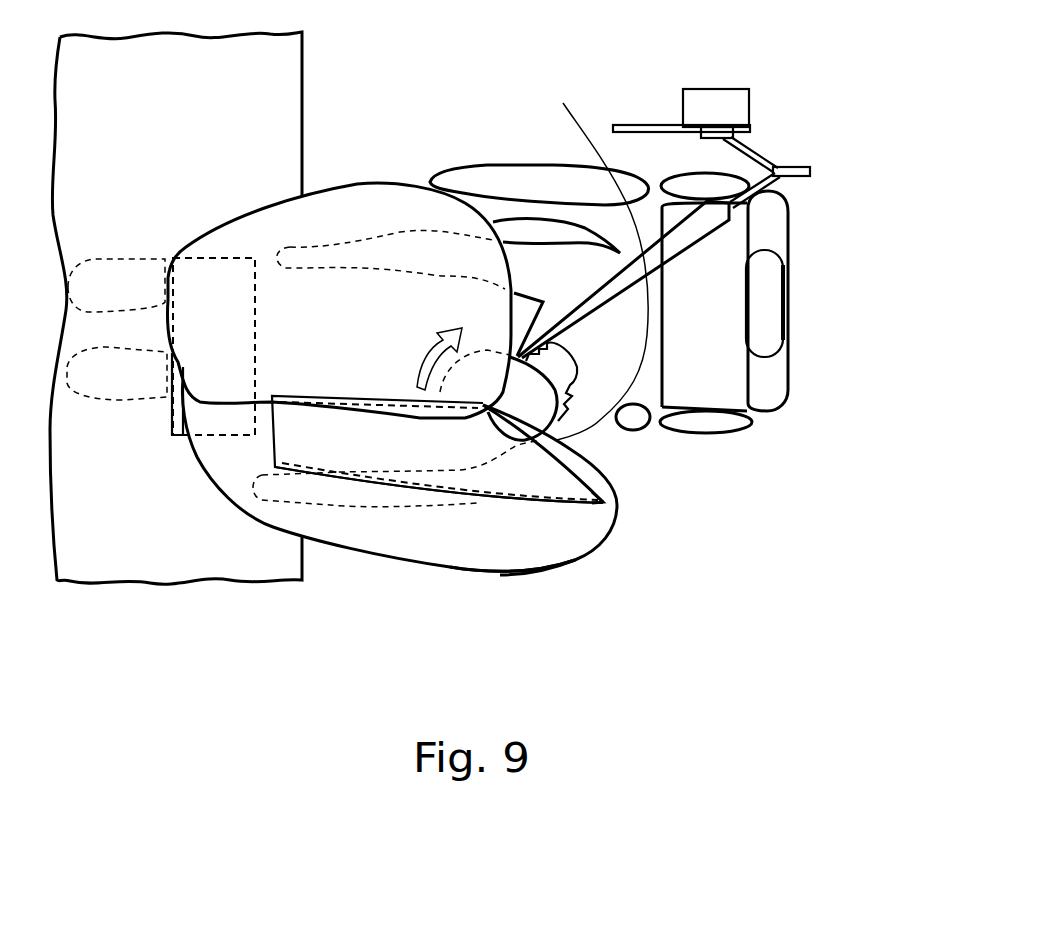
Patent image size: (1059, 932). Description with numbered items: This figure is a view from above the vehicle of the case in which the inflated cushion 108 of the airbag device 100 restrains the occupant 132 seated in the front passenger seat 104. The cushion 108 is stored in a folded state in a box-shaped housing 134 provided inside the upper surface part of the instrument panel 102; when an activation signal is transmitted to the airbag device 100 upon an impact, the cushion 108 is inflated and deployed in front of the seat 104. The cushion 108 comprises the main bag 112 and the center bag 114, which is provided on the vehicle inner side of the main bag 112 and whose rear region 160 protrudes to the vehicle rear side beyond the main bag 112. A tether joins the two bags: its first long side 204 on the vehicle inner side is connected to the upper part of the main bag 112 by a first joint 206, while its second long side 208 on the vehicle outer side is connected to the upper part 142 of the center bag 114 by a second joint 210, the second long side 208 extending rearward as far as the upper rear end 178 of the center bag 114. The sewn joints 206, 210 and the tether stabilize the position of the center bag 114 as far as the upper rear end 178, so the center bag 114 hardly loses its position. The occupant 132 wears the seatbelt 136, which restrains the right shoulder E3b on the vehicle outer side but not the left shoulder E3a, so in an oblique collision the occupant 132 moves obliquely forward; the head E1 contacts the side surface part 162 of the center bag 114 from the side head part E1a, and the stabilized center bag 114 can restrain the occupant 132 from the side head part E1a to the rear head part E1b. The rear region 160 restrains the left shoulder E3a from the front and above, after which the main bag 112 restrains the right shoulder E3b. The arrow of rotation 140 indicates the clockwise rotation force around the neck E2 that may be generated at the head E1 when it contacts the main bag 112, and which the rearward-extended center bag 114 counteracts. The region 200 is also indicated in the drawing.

The airbag device 100 is at (163, 251).
The instrument panel 102 is at (277, 67).
The front passenger seat 104 is at (768, 230).
The cushion 108 is at (472, 190).
The main bag 112 is at (325, 205).
The center bag 114 is at (578, 545).
The occupant 132 is at (620, 437).
The housing 134 is at (170, 420).
The seatbelt 136 is at (649, 254).
The rotation 140 is at (418, 355).
The upper part of the center bag 142 is at (560, 547).
The rear region 160 is at (593, 566).
The side surface part 162 is at (612, 482).
The upper rear end 178 is at (612, 503).
The inflator housing 200 is at (285, 390).
The first long side 204 is at (313, 397).
The first joint 206 is at (341, 406).
The second long side 208 is at (358, 480).
The second joint 210 is at (393, 480).
The head E1 is at (537, 417).
The side head part E1a is at (443, 413).
The rear head part E1b is at (590, 387).
The neck E2 is at (555, 362).
The left shoulder E3a is at (477, 503).
The right shoulder E3b is at (555, 265).